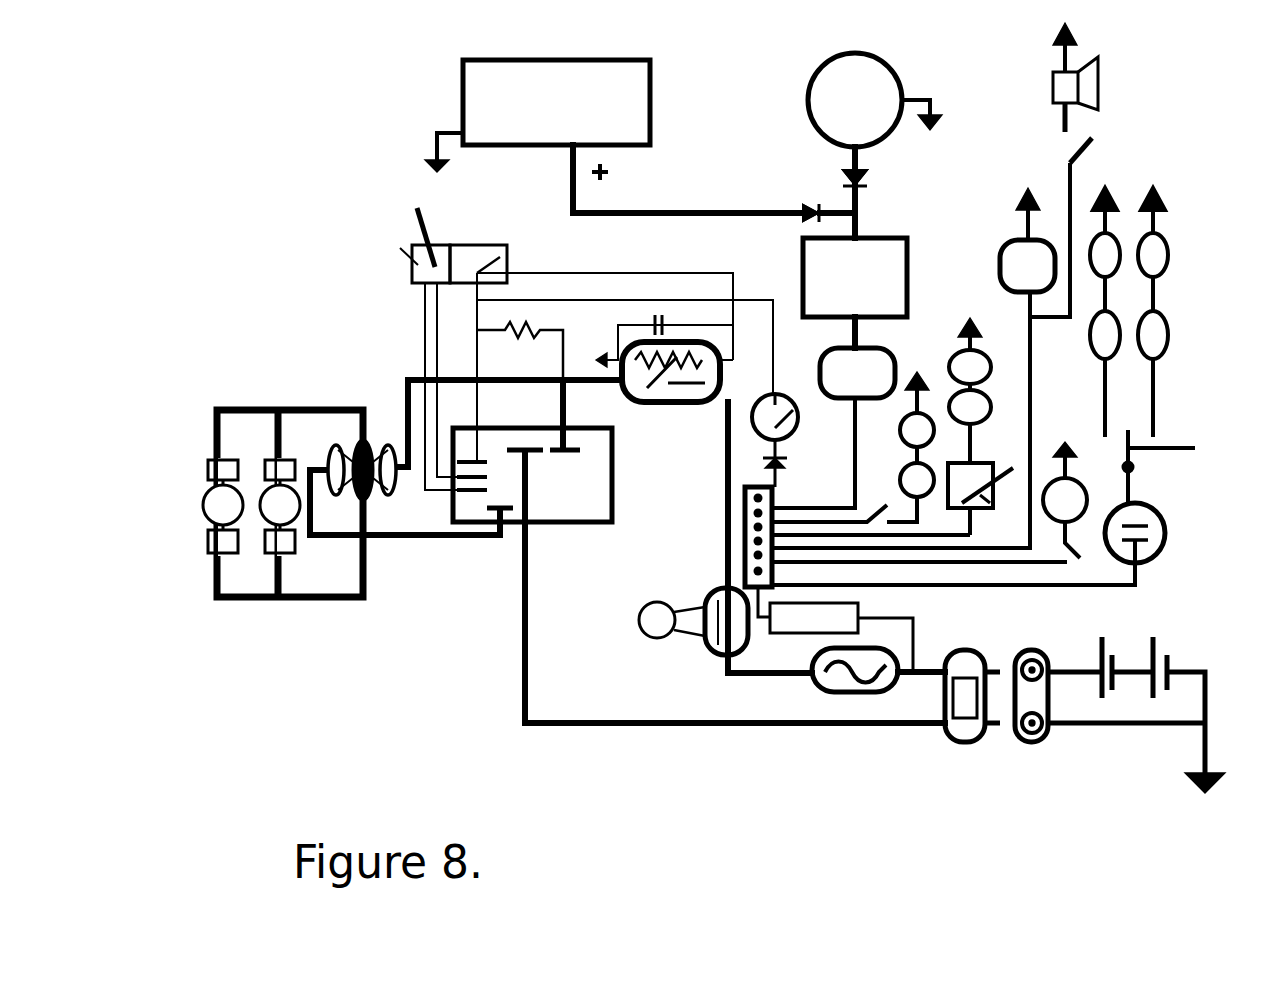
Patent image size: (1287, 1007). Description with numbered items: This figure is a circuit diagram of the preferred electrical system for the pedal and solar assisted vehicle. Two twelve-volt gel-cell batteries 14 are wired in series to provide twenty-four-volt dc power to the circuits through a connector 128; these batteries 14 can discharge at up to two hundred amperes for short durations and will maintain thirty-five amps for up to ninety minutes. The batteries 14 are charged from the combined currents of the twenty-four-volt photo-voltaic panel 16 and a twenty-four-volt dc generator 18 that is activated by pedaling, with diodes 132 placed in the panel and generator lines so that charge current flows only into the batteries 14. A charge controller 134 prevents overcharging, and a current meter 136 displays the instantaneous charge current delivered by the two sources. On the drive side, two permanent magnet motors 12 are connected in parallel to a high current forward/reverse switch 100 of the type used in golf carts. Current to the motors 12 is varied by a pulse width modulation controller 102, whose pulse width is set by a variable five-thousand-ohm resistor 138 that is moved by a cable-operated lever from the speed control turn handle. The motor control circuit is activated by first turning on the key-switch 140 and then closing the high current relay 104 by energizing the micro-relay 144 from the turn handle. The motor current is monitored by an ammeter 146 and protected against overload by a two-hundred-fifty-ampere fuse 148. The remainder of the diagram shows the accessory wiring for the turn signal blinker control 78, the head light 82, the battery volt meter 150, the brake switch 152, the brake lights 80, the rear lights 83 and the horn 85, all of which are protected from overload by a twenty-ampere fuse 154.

The permanent magnet motors 12 is at (158, 607).
The gel-cell batteries 14 is at (1125, 643).
The photo-voltaic panel 16 is at (630, 85).
The dc generator 18 is at (868, 72).
The turn signal blinker control 78 is at (1140, 517).
The brake lights 80 is at (985, 360).
The head light 82 is at (1068, 490).
The rear lights 83 is at (902, 478).
The horn 85 is at (1087, 152).
The forward/reverse switch 100 is at (367, 502).
The pulse width modulation controller 102 is at (577, 495).
The high current relay 104 is at (655, 402).
The connector 128 is at (975, 743).
The diodes 132 is at (808, 206).
The charge controller 134 is at (911, 238).
The current meter 136 is at (875, 367).
The variable resistor 138 is at (412, 250).
The key-switch 140 is at (790, 430).
The micro-relay 144 is at (487, 250).
The ammeter 146 is at (700, 630).
The fuse 148 is at (848, 692).
The battery volt meter 150 is at (1018, 257).
The brake switch 152 is at (975, 470).
The fuse 154 is at (825, 618).